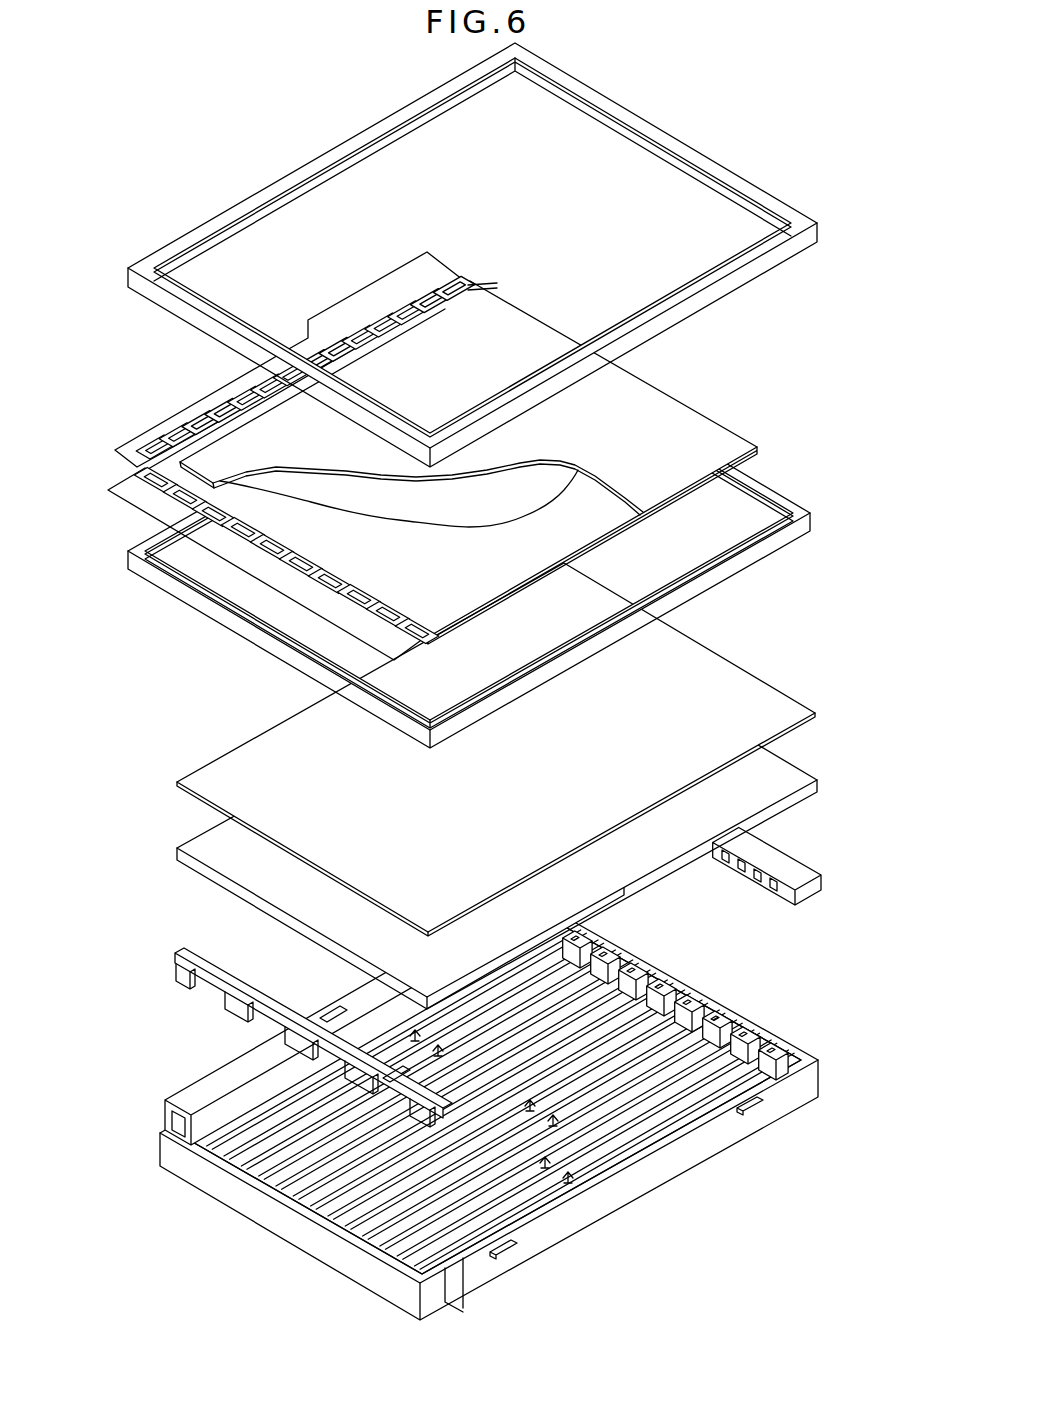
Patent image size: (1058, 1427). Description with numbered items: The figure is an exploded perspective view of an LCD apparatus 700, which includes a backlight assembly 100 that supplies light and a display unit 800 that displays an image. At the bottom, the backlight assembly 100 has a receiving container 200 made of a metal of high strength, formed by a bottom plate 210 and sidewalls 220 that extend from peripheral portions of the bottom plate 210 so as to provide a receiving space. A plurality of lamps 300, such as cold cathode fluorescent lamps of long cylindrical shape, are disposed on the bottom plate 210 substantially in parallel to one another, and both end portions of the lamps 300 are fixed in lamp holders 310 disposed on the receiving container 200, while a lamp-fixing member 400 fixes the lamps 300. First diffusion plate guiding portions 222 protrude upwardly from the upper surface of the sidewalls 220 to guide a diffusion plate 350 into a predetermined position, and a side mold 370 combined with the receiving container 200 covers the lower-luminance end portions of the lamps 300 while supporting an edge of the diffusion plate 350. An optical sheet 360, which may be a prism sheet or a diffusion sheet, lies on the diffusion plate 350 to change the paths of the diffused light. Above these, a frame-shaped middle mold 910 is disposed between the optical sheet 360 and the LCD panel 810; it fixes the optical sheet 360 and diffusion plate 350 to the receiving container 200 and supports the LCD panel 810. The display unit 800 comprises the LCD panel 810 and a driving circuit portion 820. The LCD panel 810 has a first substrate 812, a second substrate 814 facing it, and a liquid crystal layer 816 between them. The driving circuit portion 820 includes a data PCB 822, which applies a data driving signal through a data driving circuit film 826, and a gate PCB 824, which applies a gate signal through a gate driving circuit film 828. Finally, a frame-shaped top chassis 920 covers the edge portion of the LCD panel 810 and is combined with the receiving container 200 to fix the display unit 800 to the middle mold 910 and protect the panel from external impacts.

The backlight assembly 100 is at (148, 1166).
The receiving container 200 is at (803, 1037).
The bottom plate 210 is at (700, 1120).
The sidewalls 220 is at (780, 1117).
The first diffusion plate guiding portion 222 is at (512, 1247).
The lamps 300 is at (500, 1224).
The lamp holders 310 is at (750, 1037).
The diffusion plate 350 is at (796, 760).
The optical sheet 360 is at (798, 692).
The side mold 370 is at (798, 837).
The lamp-fixing member 400 is at (590, 1125).
The LCD apparatus 700 is at (323, 143).
The display unit 800 is at (157, 402).
The LCD panel 810 is at (759, 434).
The first substrate 812 is at (520, 560).
The second substrate 814 is at (666, 481).
The liquid crystal layer 816 is at (542, 481).
The driving circuit portion 820 is at (109, 475).
The data printed circuit board 822 is at (327, 315).
The gate PCB 824 is at (143, 503).
The data driving circuit film 826 is at (388, 310).
The gate driving circuit film 828 is at (180, 503).
The middle mold 910 is at (788, 492).
The top chassis 920 is at (790, 202).